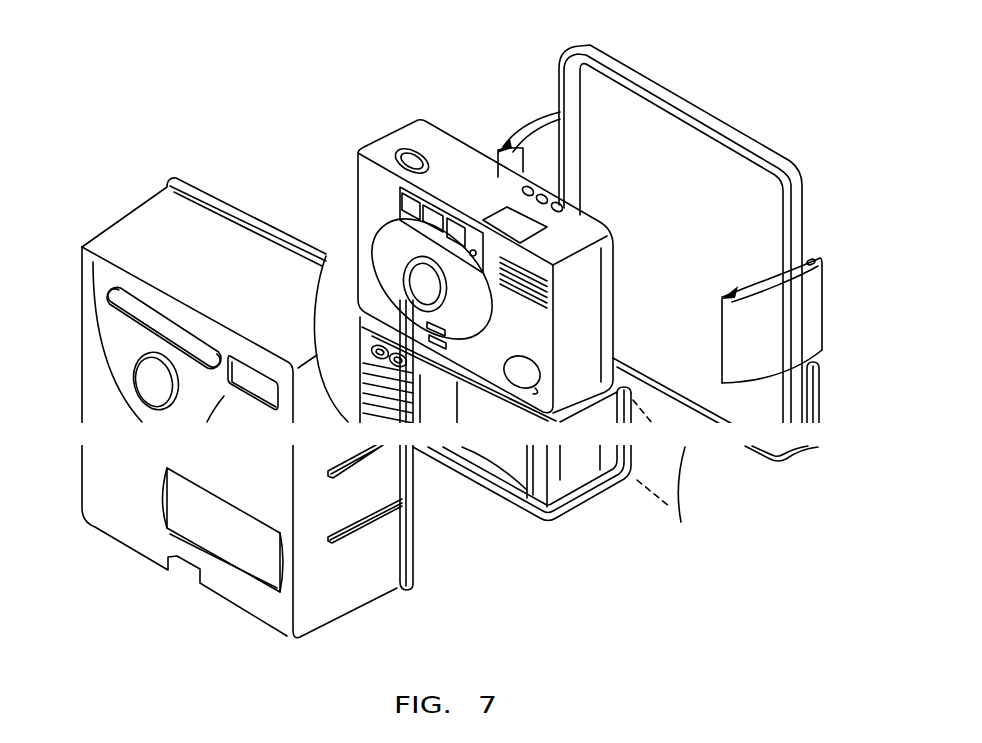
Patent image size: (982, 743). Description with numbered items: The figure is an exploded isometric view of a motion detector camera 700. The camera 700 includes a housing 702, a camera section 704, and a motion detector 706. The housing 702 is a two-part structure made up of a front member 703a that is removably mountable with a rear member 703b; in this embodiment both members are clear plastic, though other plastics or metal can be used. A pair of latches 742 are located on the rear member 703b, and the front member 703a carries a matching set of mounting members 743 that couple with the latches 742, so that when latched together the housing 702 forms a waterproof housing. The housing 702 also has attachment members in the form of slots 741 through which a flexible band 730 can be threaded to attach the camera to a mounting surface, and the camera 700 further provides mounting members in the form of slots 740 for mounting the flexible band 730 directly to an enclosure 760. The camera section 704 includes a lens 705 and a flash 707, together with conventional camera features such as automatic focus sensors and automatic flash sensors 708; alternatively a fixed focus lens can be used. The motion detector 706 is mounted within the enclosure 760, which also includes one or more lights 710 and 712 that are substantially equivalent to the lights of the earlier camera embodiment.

The motion detector camera 700 is at (250, 76).
The housing 702 is at (247, 425).
The front member 703a is at (345, 610).
The rear member 703b is at (676, 270).
The camera section 704 is at (515, 339).
The lens 705 is at (428, 286).
The motion detector 706 is at (497, 460).
The flash 707 is at (522, 295).
The automatic flash sensors 708 is at (363, 198).
The light 710 is at (437, 370).
The light 712 is at (395, 360).
The flexible band 730 is at (679, 470).
The slots 740 is at (619, 474).
The slots 741 is at (820, 410).
The latches 742 is at (534, 121).
The mounting members 743 is at (371, 527).
The enclosure 760 is at (567, 490).